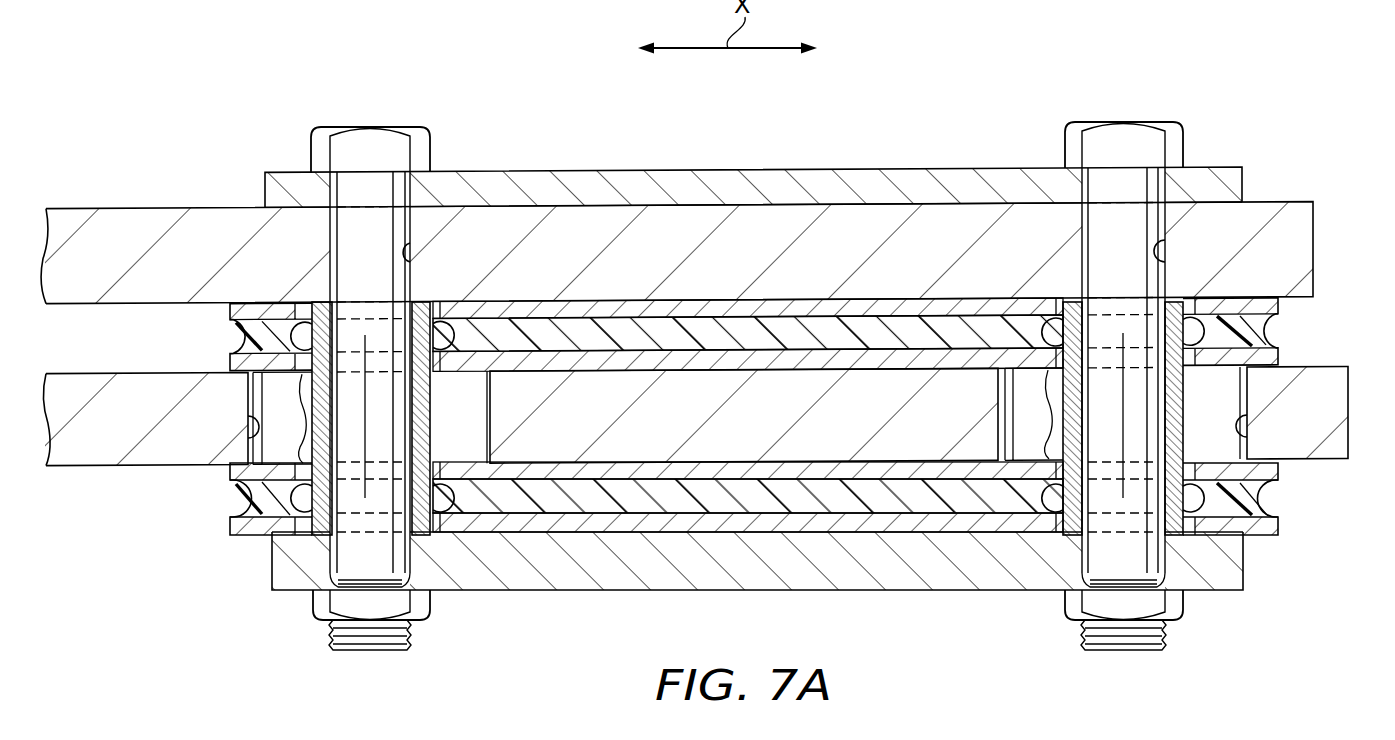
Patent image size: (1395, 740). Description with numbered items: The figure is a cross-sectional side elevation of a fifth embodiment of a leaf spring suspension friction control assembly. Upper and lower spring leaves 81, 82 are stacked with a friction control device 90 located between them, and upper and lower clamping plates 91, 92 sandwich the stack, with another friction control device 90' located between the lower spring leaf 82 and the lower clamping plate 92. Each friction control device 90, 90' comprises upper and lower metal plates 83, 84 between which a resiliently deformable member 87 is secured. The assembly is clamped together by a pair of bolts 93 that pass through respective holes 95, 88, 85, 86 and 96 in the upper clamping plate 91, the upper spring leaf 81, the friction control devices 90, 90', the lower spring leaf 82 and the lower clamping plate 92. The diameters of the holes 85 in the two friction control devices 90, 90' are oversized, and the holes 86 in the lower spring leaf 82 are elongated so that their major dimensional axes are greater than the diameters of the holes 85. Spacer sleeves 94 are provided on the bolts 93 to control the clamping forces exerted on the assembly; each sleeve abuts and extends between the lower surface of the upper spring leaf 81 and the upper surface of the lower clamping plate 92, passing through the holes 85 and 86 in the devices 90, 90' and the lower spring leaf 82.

The upper spring leaf 81 is at (748, 270).
The lower spring leaf 82 is at (672, 437).
The upper metal plate 83 is at (594, 305).
The lower metal plate 84 is at (945, 367).
The holes in friction control devices 85 is at (658, 416).
The holes in lower spring leaf 86 is at (244, 420).
The resiliently deformable member 87 is at (790, 495).
The holes in upper spring leaf 88 is at (419, 258).
The friction control device 90 is at (806, 334).
The friction control device 90' is at (807, 499).
The upper clamping plate 91 is at (745, 168).
The lower clamping plate 92 is at (660, 578).
The bolt 93 is at (388, 273).
The spacer sleeve 94 is at (431, 405).
The holes in upper clamping plate 95 is at (342, 192).
The holes in lower clamping plate 96 is at (333, 563).